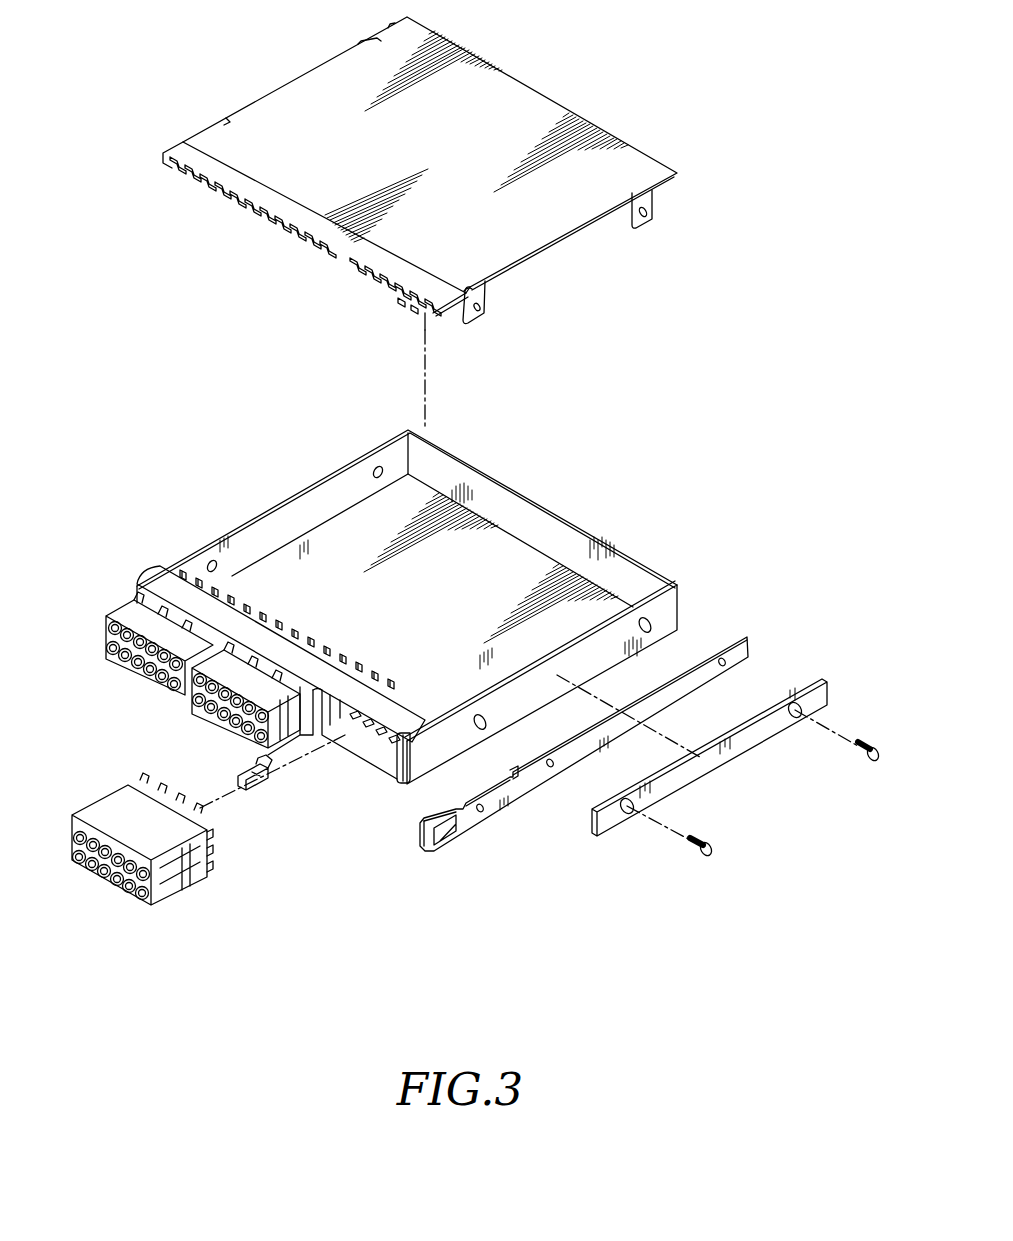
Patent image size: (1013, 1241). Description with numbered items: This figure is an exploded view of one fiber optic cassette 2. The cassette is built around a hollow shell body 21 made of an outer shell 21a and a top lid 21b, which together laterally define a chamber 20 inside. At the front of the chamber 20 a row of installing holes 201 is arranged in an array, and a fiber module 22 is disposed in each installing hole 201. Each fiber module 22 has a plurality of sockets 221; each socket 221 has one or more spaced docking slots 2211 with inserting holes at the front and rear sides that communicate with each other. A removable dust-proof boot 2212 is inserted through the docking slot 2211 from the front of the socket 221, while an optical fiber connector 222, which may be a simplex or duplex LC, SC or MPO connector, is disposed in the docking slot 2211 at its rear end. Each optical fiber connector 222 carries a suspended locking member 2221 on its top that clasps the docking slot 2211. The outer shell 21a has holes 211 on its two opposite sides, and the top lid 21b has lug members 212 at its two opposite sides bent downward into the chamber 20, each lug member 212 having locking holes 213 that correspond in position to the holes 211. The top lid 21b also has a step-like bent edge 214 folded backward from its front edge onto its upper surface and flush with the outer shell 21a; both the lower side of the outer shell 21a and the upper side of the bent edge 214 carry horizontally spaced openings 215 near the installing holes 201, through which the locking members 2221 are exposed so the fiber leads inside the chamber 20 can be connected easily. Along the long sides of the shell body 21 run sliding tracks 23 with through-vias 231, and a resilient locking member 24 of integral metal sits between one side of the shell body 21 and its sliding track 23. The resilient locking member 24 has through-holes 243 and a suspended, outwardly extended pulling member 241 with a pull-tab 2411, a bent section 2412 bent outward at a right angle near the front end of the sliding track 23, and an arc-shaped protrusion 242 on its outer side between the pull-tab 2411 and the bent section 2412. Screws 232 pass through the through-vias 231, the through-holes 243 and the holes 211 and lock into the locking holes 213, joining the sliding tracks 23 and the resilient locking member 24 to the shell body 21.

The fiber optic cassette 2 is at (255, 82).
The chamber 20 is at (502, 558).
The shell body 21 is at (302, 375).
The outer shell 21a is at (362, 476).
The top lid 21b is at (553, 232).
The holes 211 is at (211, 563).
The lug members 212 is at (483, 291).
The locking holes 213 is at (468, 291).
The step-like bent edge 214 is at (262, 210).
The openings 215 is at (380, 742).
The installing holes 201 is at (397, 770).
The fiber module 22 is at (203, 899).
The socket 221 is at (100, 815).
The docking slot 2211 is at (138, 900).
The dust-proof boot 2212 is at (105, 870).
The optical fiber connector 222 is at (240, 772).
The locking member 2221 is at (258, 757).
The sliding track 23 is at (733, 750).
The through-vias 231 is at (626, 812).
The screws 232 is at (700, 855).
The resilient locking member 24 is at (578, 748).
The pulling member 241 is at (420, 835).
The pull-tab 2411 is at (448, 840).
The bent section 2412 is at (520, 775).
The arc-shaped protrusion 242 is at (483, 812).
The through-holes 243 is at (720, 665).